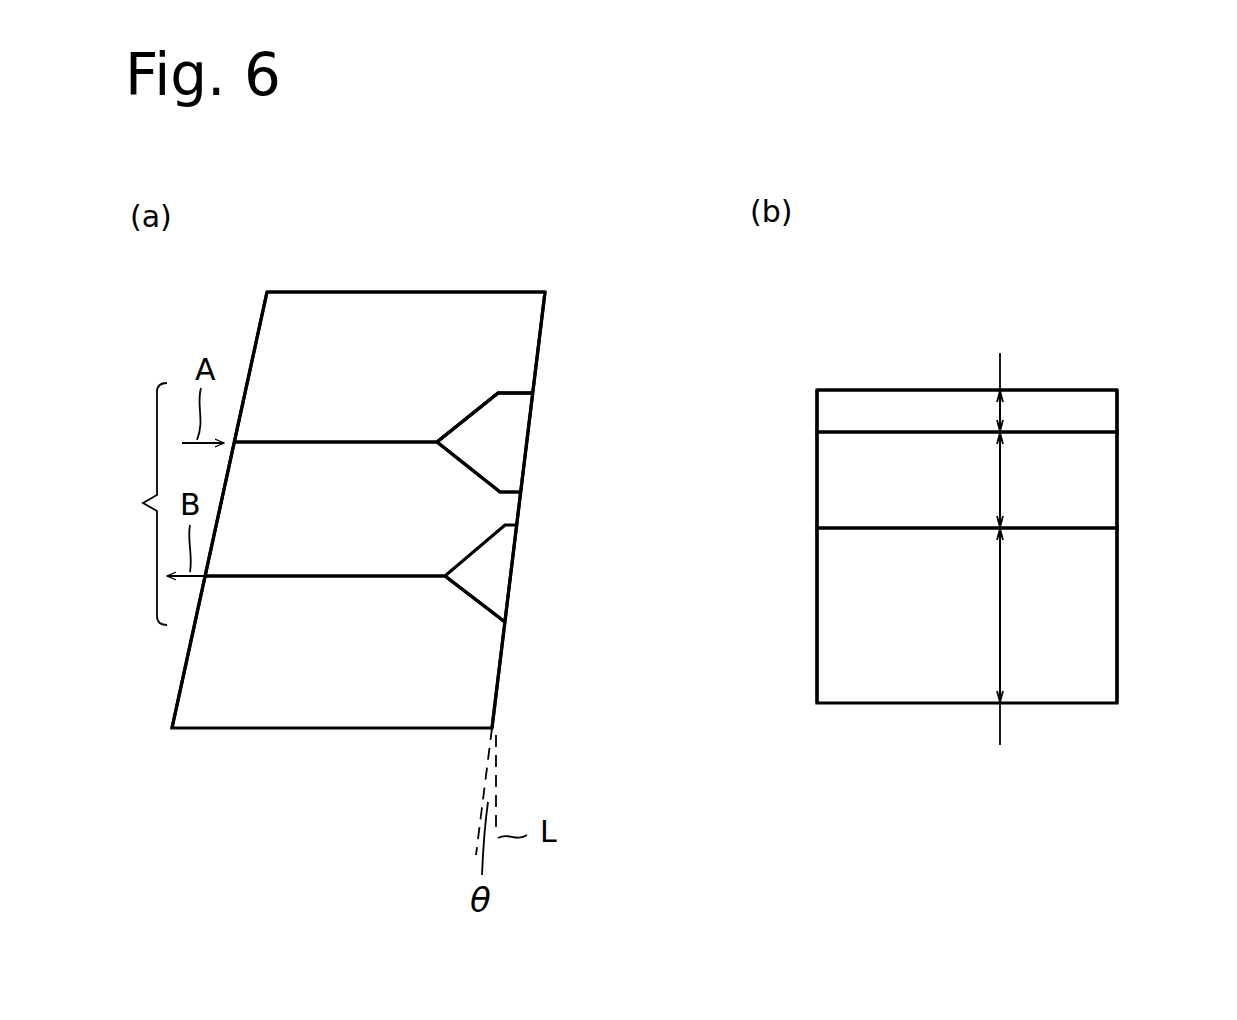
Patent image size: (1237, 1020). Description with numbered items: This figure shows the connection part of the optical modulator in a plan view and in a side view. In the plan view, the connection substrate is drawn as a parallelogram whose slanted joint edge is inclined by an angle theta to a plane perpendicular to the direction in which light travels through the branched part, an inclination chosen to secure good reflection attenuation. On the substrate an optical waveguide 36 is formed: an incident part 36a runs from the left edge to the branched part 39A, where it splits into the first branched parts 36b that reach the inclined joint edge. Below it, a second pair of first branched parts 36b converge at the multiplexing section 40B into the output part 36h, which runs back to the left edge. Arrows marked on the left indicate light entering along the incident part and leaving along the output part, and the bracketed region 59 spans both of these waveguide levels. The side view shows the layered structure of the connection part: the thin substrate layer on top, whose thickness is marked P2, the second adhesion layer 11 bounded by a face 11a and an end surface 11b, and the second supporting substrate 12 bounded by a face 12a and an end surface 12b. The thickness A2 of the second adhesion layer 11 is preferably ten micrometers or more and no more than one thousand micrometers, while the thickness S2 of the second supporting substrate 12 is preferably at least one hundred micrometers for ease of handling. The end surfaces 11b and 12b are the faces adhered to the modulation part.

The branched part 39A is at (437, 440).
The channel 36 is at (414, 430).
The incident part 36a is at (350, 444).
The first branched parts 36b is at (475, 400).
The multiplexing section 40B is at (441, 568).
The output part 36h is at (331, 579).
The channel pair 59 is at (131, 504).
The second adhesion layer 11 is at (835, 510).
The first layer left face 11a is at (817, 463).
The end surface of second adhesion layer 11b is at (1118, 468).
The second supporting substrate 12 is at (835, 657).
The second layer left face 12a is at (817, 593).
The end surface of second supporting substrate 12b is at (1118, 568).
The pitch P2 is at (1001, 418).
The thickness of second adhesion layer A2 is at (1002, 485).
The thickness of second supporting substrate S2 is at (1002, 625).